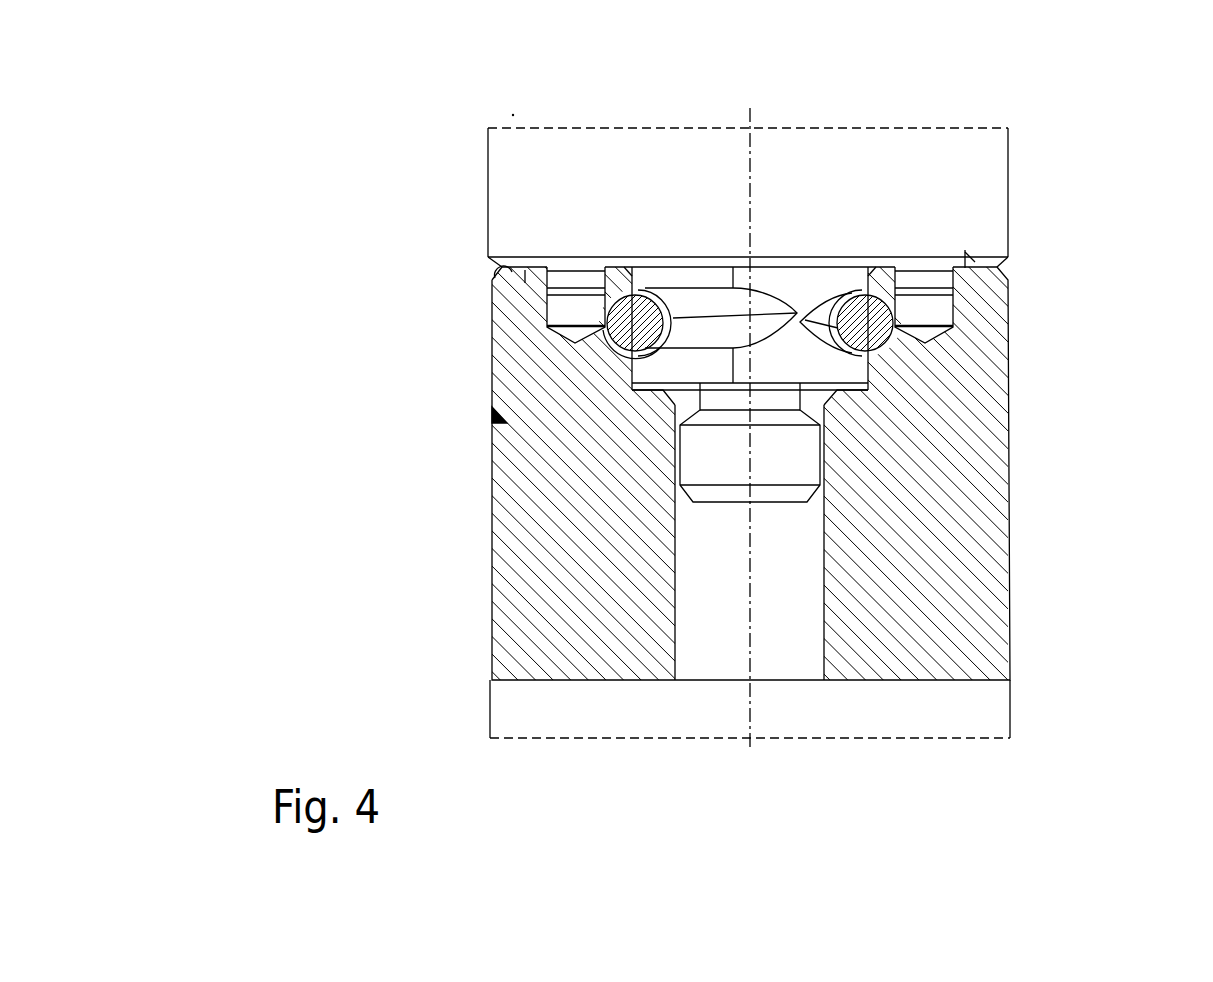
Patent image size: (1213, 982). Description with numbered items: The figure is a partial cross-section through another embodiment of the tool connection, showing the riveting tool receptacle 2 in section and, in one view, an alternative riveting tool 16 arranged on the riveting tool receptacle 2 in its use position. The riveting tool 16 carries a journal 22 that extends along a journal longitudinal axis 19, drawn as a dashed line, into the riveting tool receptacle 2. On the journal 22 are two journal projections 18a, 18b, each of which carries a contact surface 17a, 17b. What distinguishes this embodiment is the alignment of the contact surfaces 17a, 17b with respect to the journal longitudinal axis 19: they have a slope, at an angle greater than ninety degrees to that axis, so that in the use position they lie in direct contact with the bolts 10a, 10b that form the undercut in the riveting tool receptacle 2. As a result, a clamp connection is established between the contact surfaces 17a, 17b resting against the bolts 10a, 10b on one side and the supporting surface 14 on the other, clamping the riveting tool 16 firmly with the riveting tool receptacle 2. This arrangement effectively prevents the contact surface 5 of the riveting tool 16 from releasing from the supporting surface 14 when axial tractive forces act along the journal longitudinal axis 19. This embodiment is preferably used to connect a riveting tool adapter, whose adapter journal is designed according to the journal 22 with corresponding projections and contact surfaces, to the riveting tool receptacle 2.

The riveting tool receptacle 2 is at (948, 597).
The contact surface 5 is at (502, 278).
The bolt 10a is at (870, 322).
The bolt 10b is at (635, 322).
The supporting surface 14 is at (973, 258).
The riveting tool 16 is at (967, 185).
The contact surface 17a is at (872, 335).
The contact surface 17b is at (665, 336).
The journal projection 18a is at (882, 372).
The journal projection 18b is at (653, 372).
The journal longitudinal axis 19 is at (752, 119).
The journal 22 is at (640, 421).